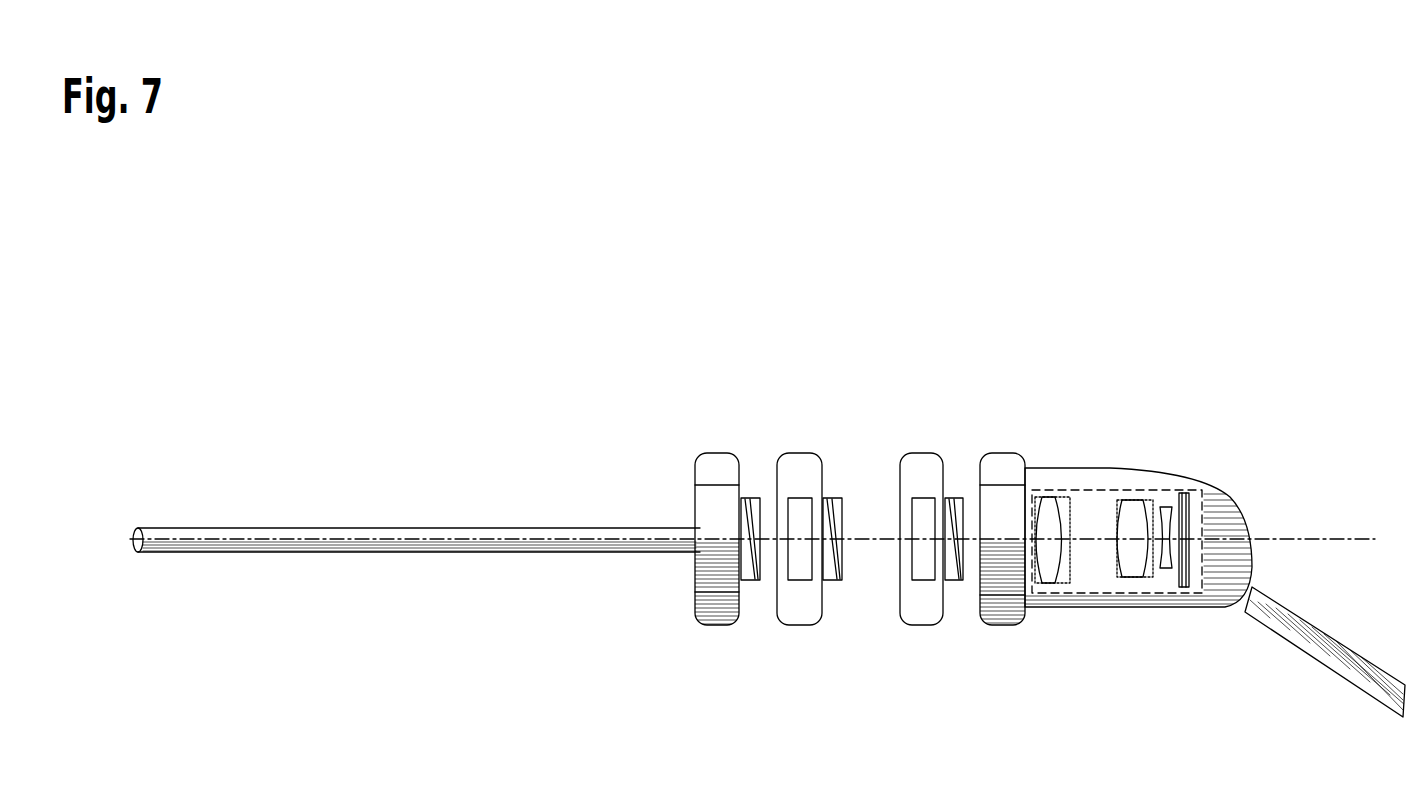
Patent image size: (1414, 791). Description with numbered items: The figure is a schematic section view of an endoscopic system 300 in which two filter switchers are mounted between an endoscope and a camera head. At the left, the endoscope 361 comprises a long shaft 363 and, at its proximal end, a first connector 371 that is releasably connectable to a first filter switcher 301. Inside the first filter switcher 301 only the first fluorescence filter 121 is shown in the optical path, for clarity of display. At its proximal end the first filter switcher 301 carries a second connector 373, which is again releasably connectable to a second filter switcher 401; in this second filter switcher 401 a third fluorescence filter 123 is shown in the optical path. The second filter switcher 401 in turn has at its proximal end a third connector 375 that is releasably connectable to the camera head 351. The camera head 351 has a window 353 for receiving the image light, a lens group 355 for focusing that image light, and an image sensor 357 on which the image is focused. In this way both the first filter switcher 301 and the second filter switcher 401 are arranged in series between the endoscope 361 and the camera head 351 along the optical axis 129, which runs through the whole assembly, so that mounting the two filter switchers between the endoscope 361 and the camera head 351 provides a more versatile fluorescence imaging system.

The endoscopic system 300 is at (272, 330).
The shaft 363 is at (450, 528).
The endoscope 361 is at (716, 468).
The first connector 371 is at (745, 578).
The first filter switcher 301 is at (802, 468).
The first fluorescence filter 121 is at (800, 560).
The second connector 373 is at (832, 500).
The second filter switcher 401 is at (922, 468).
The third fluorescence filter 123 is at (920, 560).
The third connector 375 is at (957, 500).
The window 353 is at (982, 543).
The camera head 351 is at (1099, 487).
The lens group 355 is at (1102, 562).
The image sensor 357 is at (1190, 518).
The optical axis 129 is at (1366, 539).